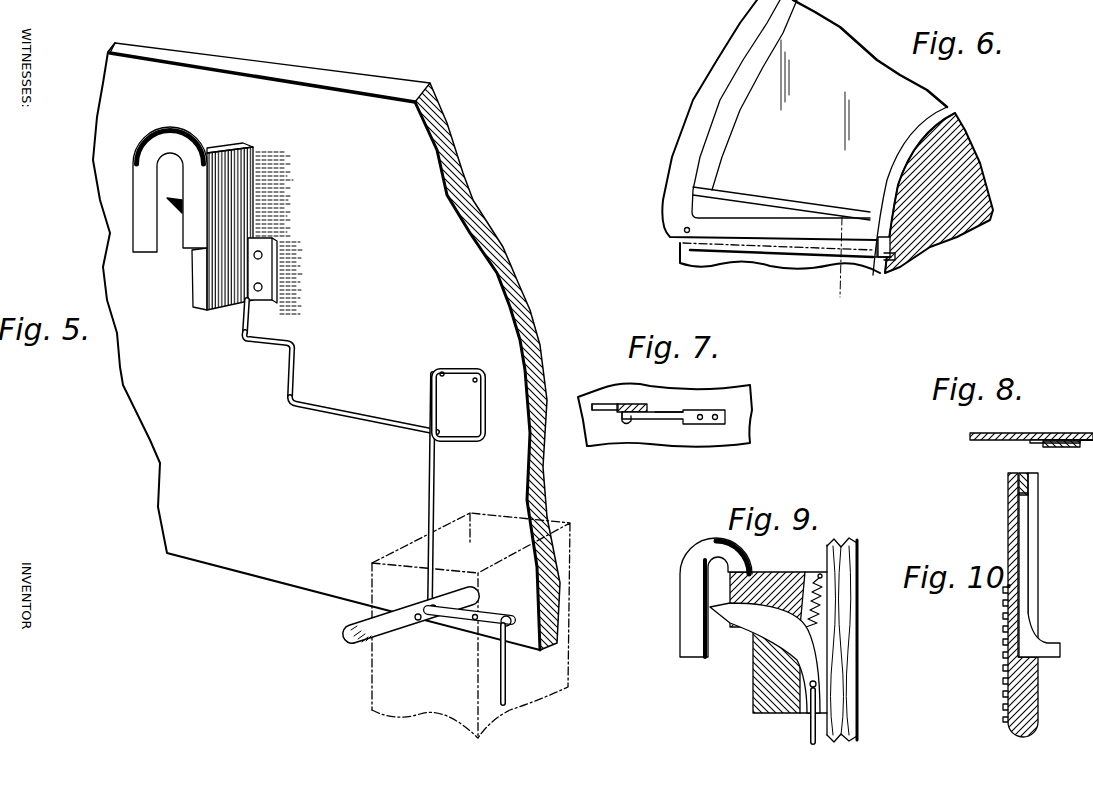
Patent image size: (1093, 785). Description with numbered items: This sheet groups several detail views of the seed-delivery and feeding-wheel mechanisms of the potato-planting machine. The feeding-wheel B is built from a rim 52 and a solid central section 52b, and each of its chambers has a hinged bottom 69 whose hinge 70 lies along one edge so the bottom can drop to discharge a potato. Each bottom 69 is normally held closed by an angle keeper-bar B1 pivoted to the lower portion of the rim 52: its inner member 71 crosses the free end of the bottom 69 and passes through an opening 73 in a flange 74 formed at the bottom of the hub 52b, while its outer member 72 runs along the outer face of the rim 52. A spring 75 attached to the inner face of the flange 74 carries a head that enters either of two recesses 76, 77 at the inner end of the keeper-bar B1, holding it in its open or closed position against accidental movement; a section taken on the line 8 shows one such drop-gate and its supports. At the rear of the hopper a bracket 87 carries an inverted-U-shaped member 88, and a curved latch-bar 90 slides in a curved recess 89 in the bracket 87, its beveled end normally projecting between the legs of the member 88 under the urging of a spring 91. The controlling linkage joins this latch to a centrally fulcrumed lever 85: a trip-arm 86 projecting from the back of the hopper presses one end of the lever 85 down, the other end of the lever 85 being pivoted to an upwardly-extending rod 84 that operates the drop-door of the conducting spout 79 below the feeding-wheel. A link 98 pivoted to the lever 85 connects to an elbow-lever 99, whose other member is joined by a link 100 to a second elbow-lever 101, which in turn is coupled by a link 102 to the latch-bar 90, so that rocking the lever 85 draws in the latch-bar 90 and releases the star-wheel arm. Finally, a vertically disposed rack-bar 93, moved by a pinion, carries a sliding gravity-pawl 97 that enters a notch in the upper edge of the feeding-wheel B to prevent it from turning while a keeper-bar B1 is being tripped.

In FIG. 5, the inverted-U-shaped member 88 is at (134, 186).
In FIG. 9, the inverted-U-shaped member 88 is at (686, 598).
In FIG. 5, the bracket 87 is at (248, 180).
In FIG. 9, the bracket 87 is at (781, 572).
In FIG. 5, the link 102 is at (241, 312).
In FIG. 9, the link 102 is at (808, 729).
In FIG. 5, the second elbow-lever 101 is at (287, 363).
In FIG. 5, the link 100 is at (380, 418).
In FIG. 5, the elbow-lever 99 is at (474, 408).
In FIG. 5, the link 98 is at (433, 507).
In FIG. 5, the trip-arm 86 is at (390, 613).
In FIG. 5, the arm 85 is at (503, 612).
In FIG. 5, the rod 84 is at (507, 677).
In FIG. 5, the conducting tube or spout 79 is at (383, 712).
In FIG. 6, the angle keeper-bar B1 is at (706, 59).
In FIG. 7, the angle keeper-bar B1 is at (620, 403).
In FIG. 8, the angle keeper-bar B1 is at (1042, 443).
In FIG. 6, the rim 52 is at (728, 84).
In FIG. 6, the outer member of keeper-arm 72 is at (676, 133).
In FIG. 6, the bottom 69 is at (789, 127).
In FIG. 8, the bottom 69 is at (1017, 433).
In FIG. 6, the hinge 70 is at (763, 188).
In FIG. 6, the inner member of keeper-arm 71 is at (778, 241).
In FIG. 7, the inner member of keeper-arm 71 is at (641, 409).
In FIG. 8, the inner member of keeper-arm 71 is at (1061, 456).
In FIG. 6, the flange 74 is at (884, 185).
In FIG. 7, the flange 74 is at (713, 389).
In FIG. 6, the recess 76 is at (889, 240).
In FIG. 7, the recess 76 is at (658, 413).
In FIG. 6, the recess 77 is at (895, 258).
In FIG. 7, the recess 77 is at (621, 409).
In FIG. 6, the spring 75 is at (887, 262).
In FIG. 7, the spring 75 is at (667, 424).
In FIG. 6, the feeding-wheel B is at (873, 63).
In FIG. 8, the feeding-wheel B is at (1073, 439).
In FIG. 6, the solid central section 52b is at (967, 177).
In FIG. 6, the section line 8 is at (842, 261).
In FIG. 7, the opening 73 is at (598, 411).
In FIG. 9, the spring 91 is at (838, 539).
In FIG. 9, the curved latch-bar 90 is at (744, 637).
In FIG. 9, the curved recess 89 is at (760, 673).
In FIG. 10, the gravity-pawl 97 is at (1052, 640).
In FIG. 10, the rack-bar 93 is at (1009, 668).